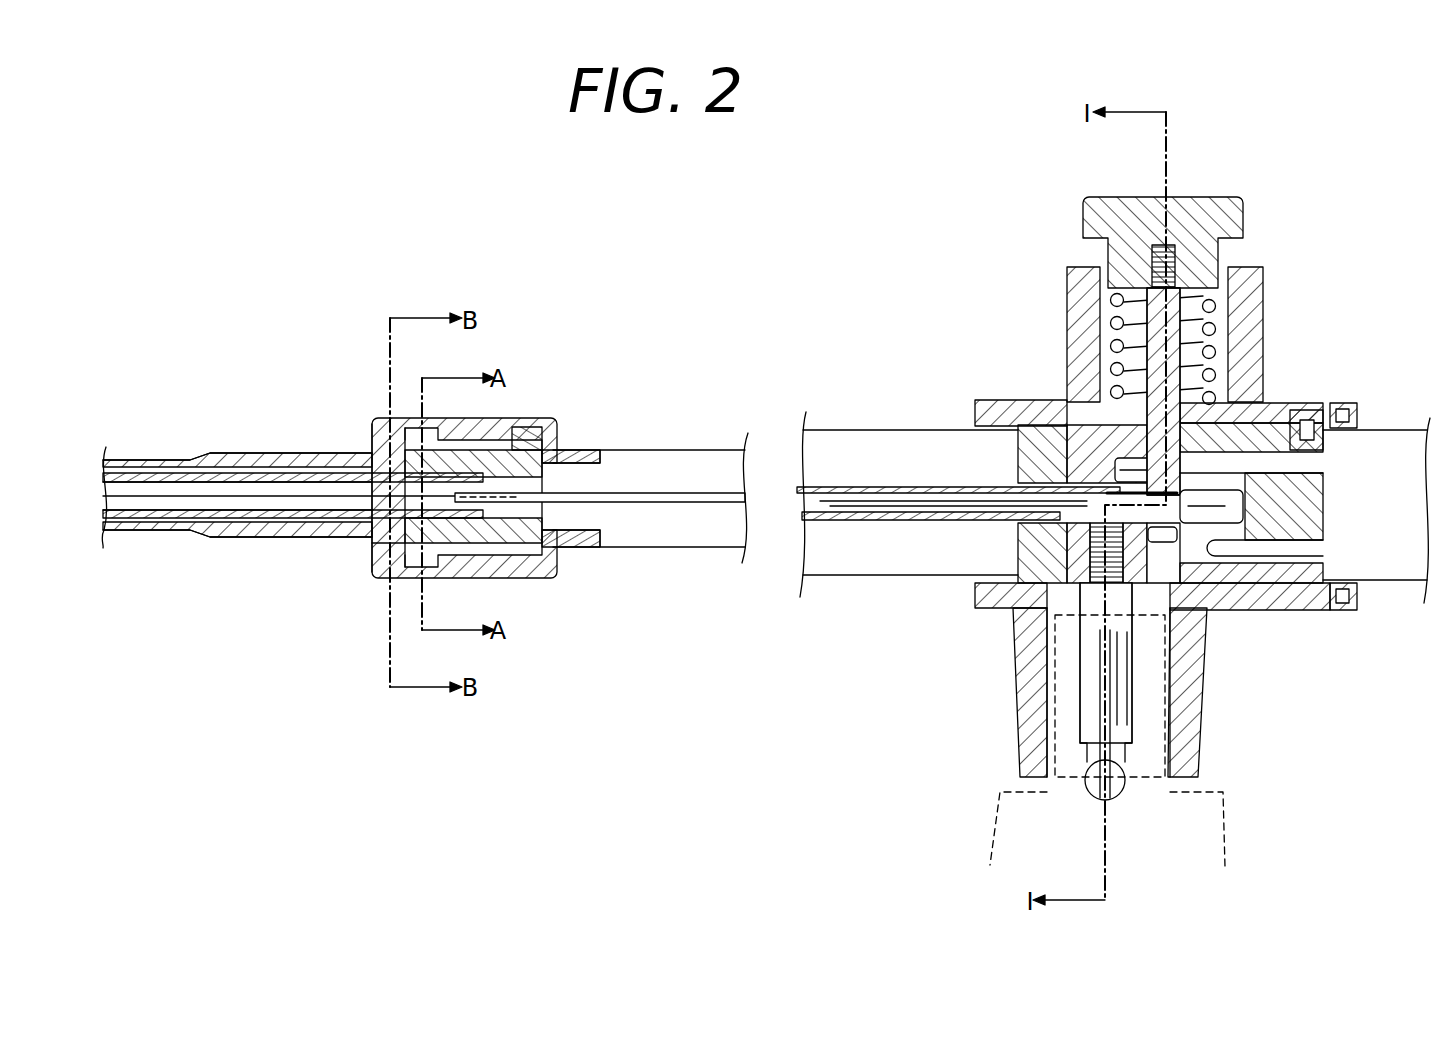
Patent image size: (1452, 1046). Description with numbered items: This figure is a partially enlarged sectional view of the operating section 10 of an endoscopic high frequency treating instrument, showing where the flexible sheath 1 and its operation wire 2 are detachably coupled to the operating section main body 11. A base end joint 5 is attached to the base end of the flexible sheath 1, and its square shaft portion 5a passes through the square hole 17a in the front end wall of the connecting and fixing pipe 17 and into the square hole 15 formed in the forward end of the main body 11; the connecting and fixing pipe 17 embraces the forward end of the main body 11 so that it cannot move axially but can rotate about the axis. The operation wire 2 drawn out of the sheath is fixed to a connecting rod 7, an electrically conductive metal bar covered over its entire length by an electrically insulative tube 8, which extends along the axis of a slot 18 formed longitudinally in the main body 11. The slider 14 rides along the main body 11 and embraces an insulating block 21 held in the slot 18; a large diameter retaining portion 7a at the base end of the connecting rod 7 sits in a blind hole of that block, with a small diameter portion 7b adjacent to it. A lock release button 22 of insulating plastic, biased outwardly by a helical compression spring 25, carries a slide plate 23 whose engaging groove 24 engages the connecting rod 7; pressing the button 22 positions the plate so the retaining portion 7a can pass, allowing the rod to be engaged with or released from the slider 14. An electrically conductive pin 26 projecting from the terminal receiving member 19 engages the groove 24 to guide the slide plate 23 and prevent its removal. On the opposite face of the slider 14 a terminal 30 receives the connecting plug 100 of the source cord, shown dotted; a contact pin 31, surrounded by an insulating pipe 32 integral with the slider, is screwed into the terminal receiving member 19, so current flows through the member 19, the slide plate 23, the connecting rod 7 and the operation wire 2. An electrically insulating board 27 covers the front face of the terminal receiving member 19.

The flexible sheath 1 is at (135, 467).
The operation wire 2 is at (220, 493).
The base end joint 5 is at (323, 533).
The square shaft portion 5a is at (537, 577).
The connecting rod 7 is at (682, 510).
The retaining portion 7a is at (1340, 405).
The small diameter portion 7b is at (1212, 553).
The electrically insulative tube 8 is at (880, 485).
The operating section 10 is at (860, 348).
The operating section main body 11 is at (530, 423).
The slider 14 is at (978, 400).
The square hole 15 is at (517, 460).
The connecting and fixing pipe 17 is at (380, 437).
The square hole 17a is at (367, 533).
The slot 18 is at (913, 553).
The terminal receiving member 19 is at (1200, 605).
The insulating block 21 is at (1318, 500).
The lock release button 22 is at (1235, 205).
The slide plate 23 is at (1157, 330).
The engaging groove 24 is at (1140, 442).
The helical compression spring 25 is at (1213, 333).
The electrically conductive pin 26 is at (1233, 415).
The electrically insulating board 27 is at (1013, 613).
The terminal 30 is at (1207, 703).
The contact pin 31 is at (1122, 790).
The insulating pipe 32 is at (1030, 737).
The connecting plug 100 is at (1245, 830).